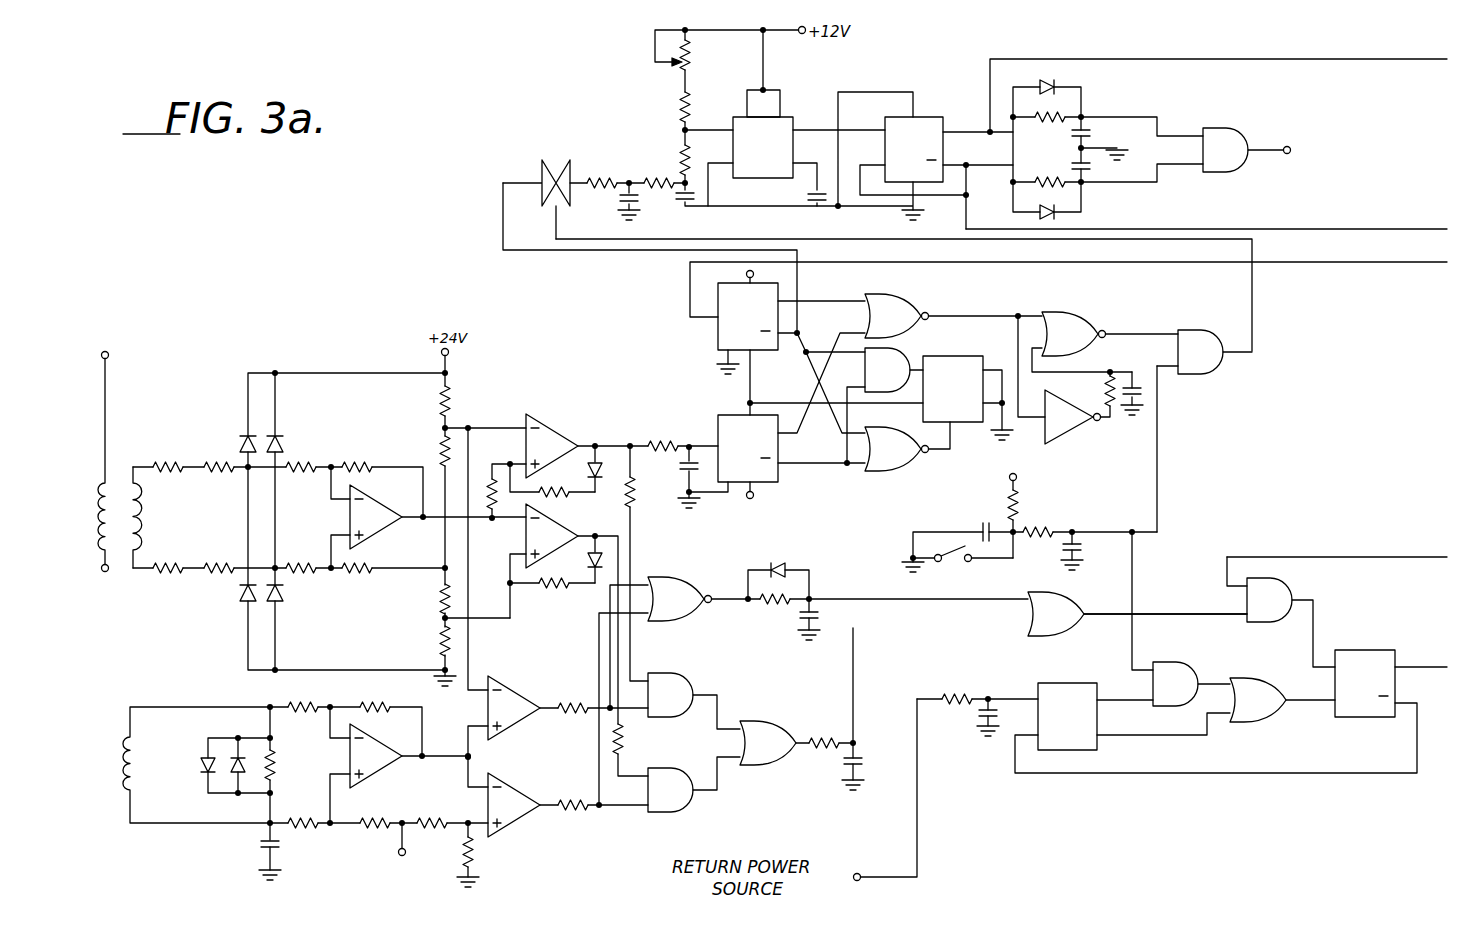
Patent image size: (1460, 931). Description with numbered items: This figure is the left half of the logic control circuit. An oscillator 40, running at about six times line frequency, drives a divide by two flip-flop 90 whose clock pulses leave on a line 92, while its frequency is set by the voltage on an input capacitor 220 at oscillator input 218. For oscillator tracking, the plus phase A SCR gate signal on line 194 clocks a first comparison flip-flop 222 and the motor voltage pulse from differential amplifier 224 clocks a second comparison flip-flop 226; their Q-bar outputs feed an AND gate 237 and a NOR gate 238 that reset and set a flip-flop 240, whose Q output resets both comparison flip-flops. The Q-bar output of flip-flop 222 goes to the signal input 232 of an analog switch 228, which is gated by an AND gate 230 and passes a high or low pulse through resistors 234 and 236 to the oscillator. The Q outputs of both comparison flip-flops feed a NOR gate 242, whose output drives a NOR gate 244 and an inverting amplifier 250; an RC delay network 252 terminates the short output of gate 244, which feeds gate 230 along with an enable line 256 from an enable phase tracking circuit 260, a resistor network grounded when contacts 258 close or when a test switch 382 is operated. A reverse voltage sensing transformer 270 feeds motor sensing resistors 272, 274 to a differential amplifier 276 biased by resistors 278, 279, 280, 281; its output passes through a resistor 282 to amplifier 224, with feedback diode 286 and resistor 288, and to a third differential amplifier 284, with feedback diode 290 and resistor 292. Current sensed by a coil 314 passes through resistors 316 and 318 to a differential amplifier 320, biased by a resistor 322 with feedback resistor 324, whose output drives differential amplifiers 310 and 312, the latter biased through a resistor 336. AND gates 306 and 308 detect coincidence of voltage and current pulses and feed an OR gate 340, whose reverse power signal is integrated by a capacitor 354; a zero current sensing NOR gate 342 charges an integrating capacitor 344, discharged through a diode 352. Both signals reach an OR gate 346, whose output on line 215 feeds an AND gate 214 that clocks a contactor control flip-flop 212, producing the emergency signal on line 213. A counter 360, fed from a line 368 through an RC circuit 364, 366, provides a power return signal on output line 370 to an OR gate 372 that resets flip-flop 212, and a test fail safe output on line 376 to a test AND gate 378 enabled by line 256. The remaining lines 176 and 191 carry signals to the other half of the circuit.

The oscillator 40 is at (785, 118).
The divide by two flip-flop 90 is at (903, 148).
The clock pulse line 92 is at (1218, 83).
The output line 176 is at (1206, 222).
The output line 191 is at (1337, 552).
The plus phase A SCR gate signal line 194 is at (1068, 289).
The contactor control flip-flop 212 is at (1216, 698).
The emergency signal line 213 is at (1421, 653).
The AND gate 214 is at (1281, 612).
The failure sense signal line 215 is at (1165, 604).
The oscillator input 218 is at (661, 152).
The input capacitor 220 is at (714, 199).
The first comparison flip-flop 222 is at (727, 341).
The second differential amplifier 224 is at (622, 441).
The second comparison flip-flop 226 is at (726, 454).
The analog switch 228 is at (530, 192).
The AND gate 230 is at (1205, 366).
The signal input 232 is at (618, 258).
The resistor 234 is at (589, 158).
The resistor 236 is at (642, 177).
The AND gate 237 is at (905, 362).
The NOR gate 238 is at (907, 458).
The flip-flop 240 is at (968, 386).
The NOR gate 242 is at (953, 303).
The NOR gate 244 is at (1105, 334).
The inverting amplifier 250 is at (1066, 387).
The RC delay network 252 is at (1134, 378).
The enable line 256 is at (1185, 449).
The contacts 258 is at (967, 515).
The enable phase tracking circuit 260 is at (1085, 533).
The reverse voltage sensing transformer 270 is at (150, 462).
The motor sensing resistor 272 is at (209, 455).
The motor sensing resistor 274 is at (209, 556).
The differential amplifier 276 is at (428, 517).
The bias resistor 278 is at (417, 401).
The bias resistor 279 is at (417, 451).
The bias resistor 280 is at (419, 599).
The bias resistor 281 is at (419, 641).
The resistor 282 is at (494, 481).
The third differential amplifier 284 is at (587, 640).
The diode 286 is at (575, 469).
The resistor 288 is at (559, 490).
The diode 290 is at (575, 559).
The resistor 292 is at (551, 586).
The AND gate 306 is at (694, 691).
The AND gate 308 is at (694, 778).
The differential amplifier 310 is at (556, 725).
The differential amplifier 312 is at (552, 824).
The coil 314 is at (196, 765).
The resistor 316 is at (296, 849).
The resistor 318 is at (291, 699).
The differential amplifier 320 is at (400, 765).
The resistor 322 is at (377, 837).
The feedback resistor 324 is at (373, 720).
The resistor 336 is at (435, 813).
The OR gate 340 is at (798, 733).
The zero current sensing NOR gate 342 is at (672, 681).
The integrating capacitor 344 is at (884, 617).
The OR gate 346 is at (1137, 627).
The diode 352 is at (783, 571).
The integrating capacitor 354 is at (817, 768).
The counter 360 is at (1061, 707).
The RC circuit resistor 364 is at (977, 687).
The RC circuit capacitor 366 is at (962, 721).
The AC power line input 368 is at (886, 780).
The power return output line 370 is at (1163, 724).
The OR gate 372 is at (1282, 689).
The test fail safe output line 376 is at (1125, 689).
The test AND gate 378 is at (1191, 675).
The test switch 382 is at (963, 571).